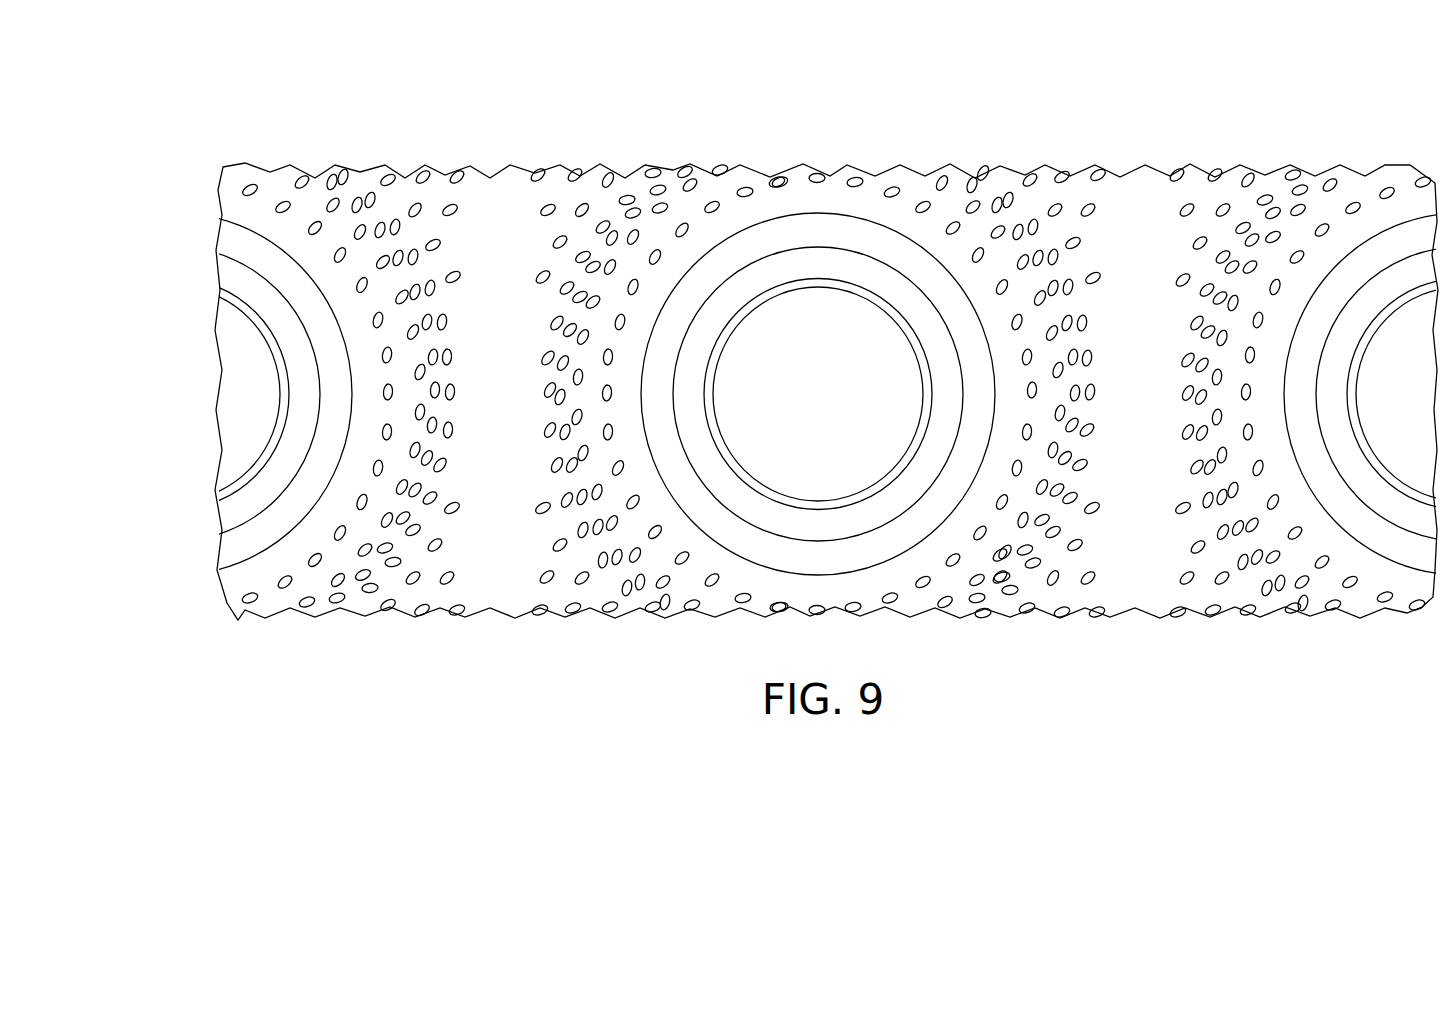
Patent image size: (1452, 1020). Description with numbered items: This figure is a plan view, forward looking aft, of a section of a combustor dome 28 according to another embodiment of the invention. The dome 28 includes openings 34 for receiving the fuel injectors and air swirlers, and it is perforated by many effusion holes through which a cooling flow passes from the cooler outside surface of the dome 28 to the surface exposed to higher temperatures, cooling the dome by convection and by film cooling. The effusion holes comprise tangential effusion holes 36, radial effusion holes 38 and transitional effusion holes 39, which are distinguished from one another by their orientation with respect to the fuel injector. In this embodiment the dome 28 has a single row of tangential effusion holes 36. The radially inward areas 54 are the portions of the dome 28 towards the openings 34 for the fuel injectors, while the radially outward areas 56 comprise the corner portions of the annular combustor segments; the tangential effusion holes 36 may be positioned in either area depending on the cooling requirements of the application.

The dome 28 is at (243, 135).
The opening 34 is at (803, 408).
The tangential effusion hole 36 is at (746, 186).
The radial effusion hole 38 is at (455, 217).
The transitional effusion hole 39 is at (628, 193).
The radially inward area 54 is at (292, 558).
The radially outward area 56 is at (1047, 193).